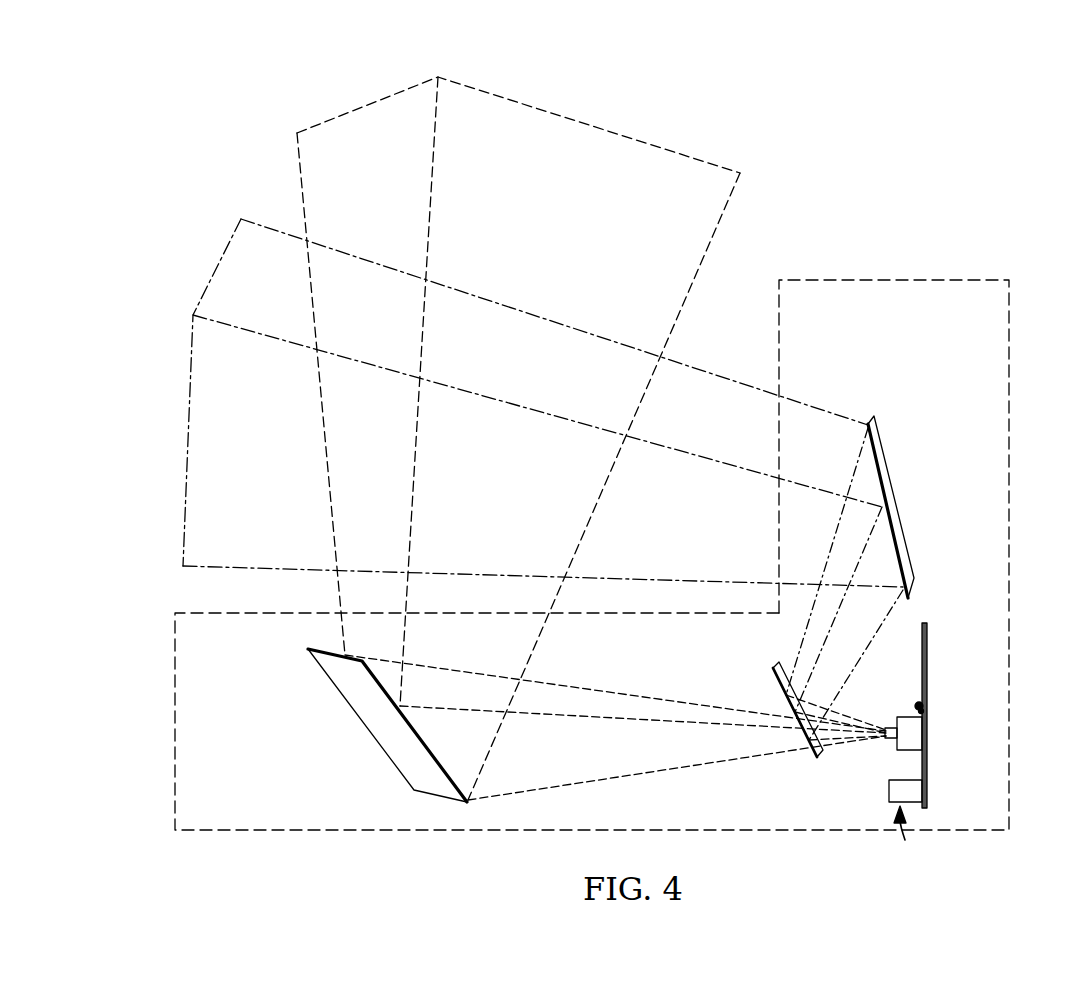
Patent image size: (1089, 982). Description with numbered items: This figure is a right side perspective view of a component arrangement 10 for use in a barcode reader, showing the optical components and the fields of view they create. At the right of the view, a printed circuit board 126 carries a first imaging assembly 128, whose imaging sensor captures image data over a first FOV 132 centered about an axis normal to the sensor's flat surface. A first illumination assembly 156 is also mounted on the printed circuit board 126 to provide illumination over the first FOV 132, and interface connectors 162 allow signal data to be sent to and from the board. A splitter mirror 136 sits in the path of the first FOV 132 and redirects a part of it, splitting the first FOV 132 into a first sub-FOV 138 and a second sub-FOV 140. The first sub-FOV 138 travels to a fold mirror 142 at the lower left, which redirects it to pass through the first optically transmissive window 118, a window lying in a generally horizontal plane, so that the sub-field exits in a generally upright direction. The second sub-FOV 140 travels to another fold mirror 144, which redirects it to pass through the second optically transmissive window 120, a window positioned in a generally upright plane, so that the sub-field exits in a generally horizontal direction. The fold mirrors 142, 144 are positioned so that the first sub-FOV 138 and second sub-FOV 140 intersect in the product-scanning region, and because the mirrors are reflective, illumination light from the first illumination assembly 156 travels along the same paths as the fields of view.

The component arrangement 10 is at (624, 540).
The first optically transmissive window 118 is at (493, 613).
The second optically transmissive window 120 is at (779, 320).
The printed circuit board 126 is at (925, 768).
The first imaging assembly 128 is at (913, 739).
The first FOV 132 is at (844, 738).
The splitter mirror 136 is at (778, 694).
The first sub-FOV 138 is at (703, 762).
The second sub-FOV 140 is at (820, 633).
The fold mirror 142 is at (372, 712).
The fold mirror 144 is at (877, 451).
The first illumination assembly 156 is at (917, 708).
The interface connectors 162 is at (906, 836).